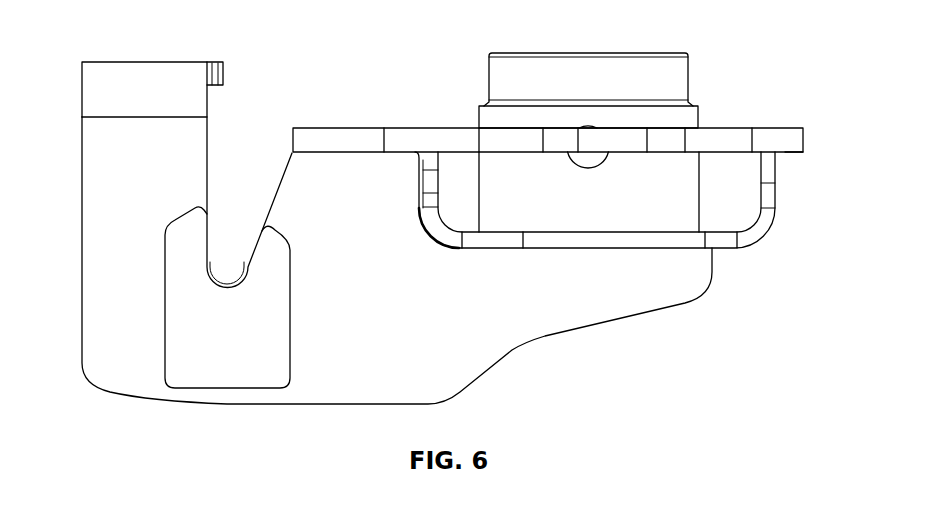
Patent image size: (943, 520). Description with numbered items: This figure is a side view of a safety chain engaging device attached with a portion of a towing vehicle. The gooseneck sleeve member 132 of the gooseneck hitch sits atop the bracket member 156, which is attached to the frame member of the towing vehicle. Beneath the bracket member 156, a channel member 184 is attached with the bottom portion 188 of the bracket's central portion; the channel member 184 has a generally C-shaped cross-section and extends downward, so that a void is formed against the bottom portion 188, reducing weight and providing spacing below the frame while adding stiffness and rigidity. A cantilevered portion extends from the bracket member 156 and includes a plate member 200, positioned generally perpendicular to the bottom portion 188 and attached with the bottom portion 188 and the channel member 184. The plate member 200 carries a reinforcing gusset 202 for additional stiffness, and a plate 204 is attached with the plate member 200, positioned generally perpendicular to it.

The gooseneck sleeve member 132 is at (680, 75).
The bracket member 156 is at (778, 137).
The channel member 184 is at (755, 227).
The bottom portion 188 is at (788, 153).
The plate member 200 is at (130, 380).
The reinforcing gusset 202 is at (222, 372).
The plate 204 is at (130, 70).